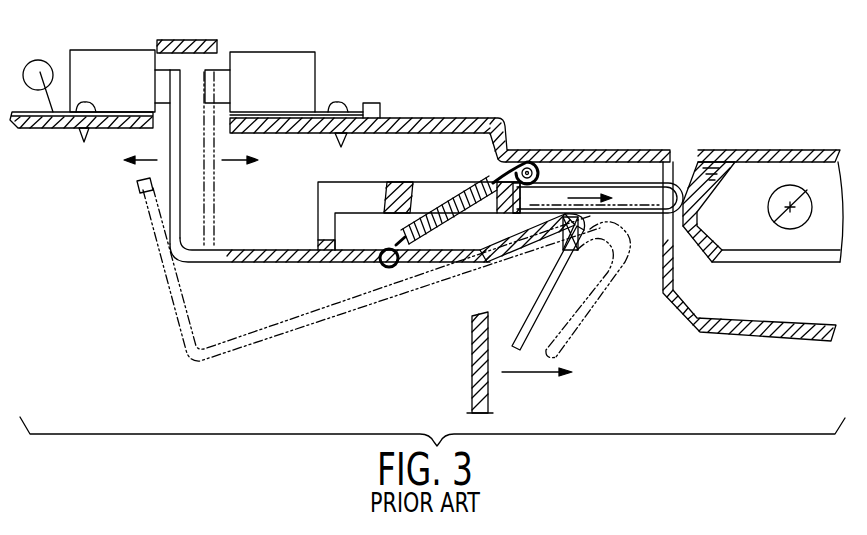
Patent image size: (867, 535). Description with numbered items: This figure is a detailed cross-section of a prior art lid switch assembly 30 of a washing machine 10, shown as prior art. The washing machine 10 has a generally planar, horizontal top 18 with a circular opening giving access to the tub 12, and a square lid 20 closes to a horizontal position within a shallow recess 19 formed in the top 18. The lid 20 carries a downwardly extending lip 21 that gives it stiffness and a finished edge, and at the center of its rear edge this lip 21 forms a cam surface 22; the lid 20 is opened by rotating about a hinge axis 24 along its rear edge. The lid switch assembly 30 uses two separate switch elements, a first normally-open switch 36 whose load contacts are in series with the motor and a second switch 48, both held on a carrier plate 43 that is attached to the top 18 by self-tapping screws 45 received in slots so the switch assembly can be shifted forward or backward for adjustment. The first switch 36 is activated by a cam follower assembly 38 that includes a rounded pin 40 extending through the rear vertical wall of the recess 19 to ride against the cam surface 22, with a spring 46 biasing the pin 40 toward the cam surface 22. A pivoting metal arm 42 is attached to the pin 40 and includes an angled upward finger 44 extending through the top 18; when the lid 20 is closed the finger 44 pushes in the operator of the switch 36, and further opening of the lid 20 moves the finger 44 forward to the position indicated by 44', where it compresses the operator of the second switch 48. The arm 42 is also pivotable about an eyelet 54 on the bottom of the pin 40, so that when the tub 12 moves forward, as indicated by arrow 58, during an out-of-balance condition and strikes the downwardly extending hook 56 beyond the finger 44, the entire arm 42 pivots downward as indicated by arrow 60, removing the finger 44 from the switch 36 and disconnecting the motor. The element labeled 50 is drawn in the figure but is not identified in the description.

The washing machine 10 is at (772, 82).
The tub 12 is at (472, 380).
The top 18 is at (450, 122).
The recess 19 is at (683, 262).
The lid 20 is at (802, 150).
The lip 21 is at (693, 177).
The cam surface 22 is at (787, 124).
The hinge axis 24 is at (772, 219).
The lid switch assembly 30 is at (140, 338).
The first switch 36 is at (107, 50).
The cam follower assembly 38 is at (623, 310).
The pin 40 is at (637, 195).
The arm 42 is at (248, 248).
The carrier plate 43 is at (365, 108).
The finger 44 is at (137, 157).
The finger forward position 44' is at (246, 159).
The self-tapping screws 45 is at (88, 100).
The spring 46 is at (458, 185).
The second switch 48 is at (279, 52).
The cable adjuster 50 is at (43, 60).
The eyelet 54 is at (565, 251).
The hook 56 is at (533, 317).
The arrow indicating tub motion 58 is at (532, 373).
The arrow indicating arm pivoting 60 is at (262, 324).